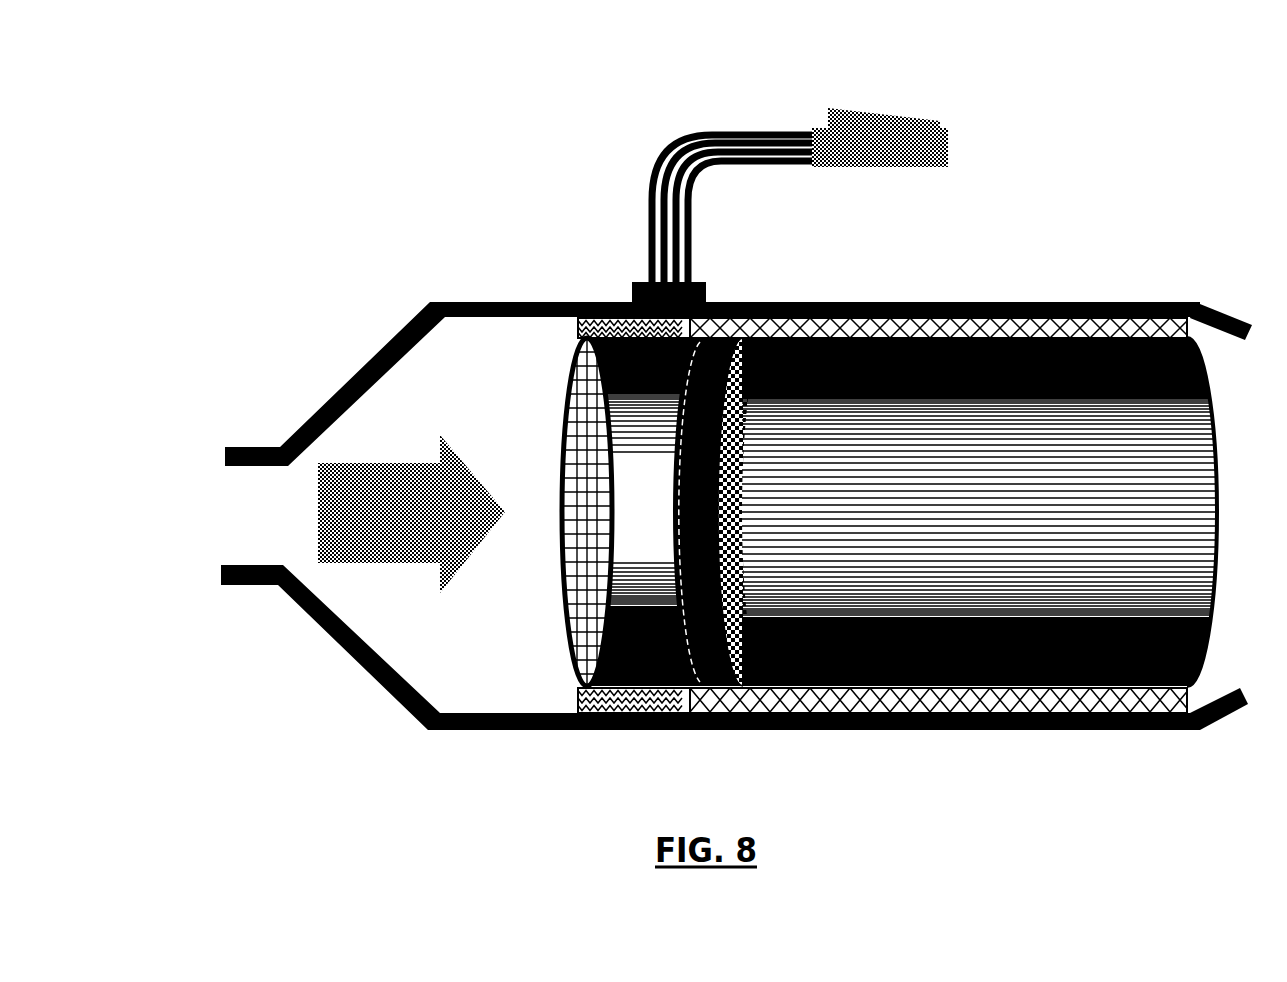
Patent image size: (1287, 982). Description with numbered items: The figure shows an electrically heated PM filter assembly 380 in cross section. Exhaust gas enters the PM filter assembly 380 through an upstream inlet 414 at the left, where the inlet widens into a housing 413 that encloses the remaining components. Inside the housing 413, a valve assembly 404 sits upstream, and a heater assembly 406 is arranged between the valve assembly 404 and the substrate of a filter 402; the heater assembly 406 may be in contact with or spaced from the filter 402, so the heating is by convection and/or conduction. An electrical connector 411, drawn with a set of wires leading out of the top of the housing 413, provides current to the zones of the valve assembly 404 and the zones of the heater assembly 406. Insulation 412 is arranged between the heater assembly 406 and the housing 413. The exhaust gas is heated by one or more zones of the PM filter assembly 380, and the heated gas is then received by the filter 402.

The electrically heated PM filter assembly 380 is at (1177, 172).
The filter 402 is at (848, 502).
The valve assembly 404 is at (608, 303).
The heater assembly 406 is at (727, 300).
The electrical connector 411 is at (938, 133).
The insulation 412 is at (578, 331).
The housing 413 is at (928, 300).
The upstream inlet 414 is at (232, 516).